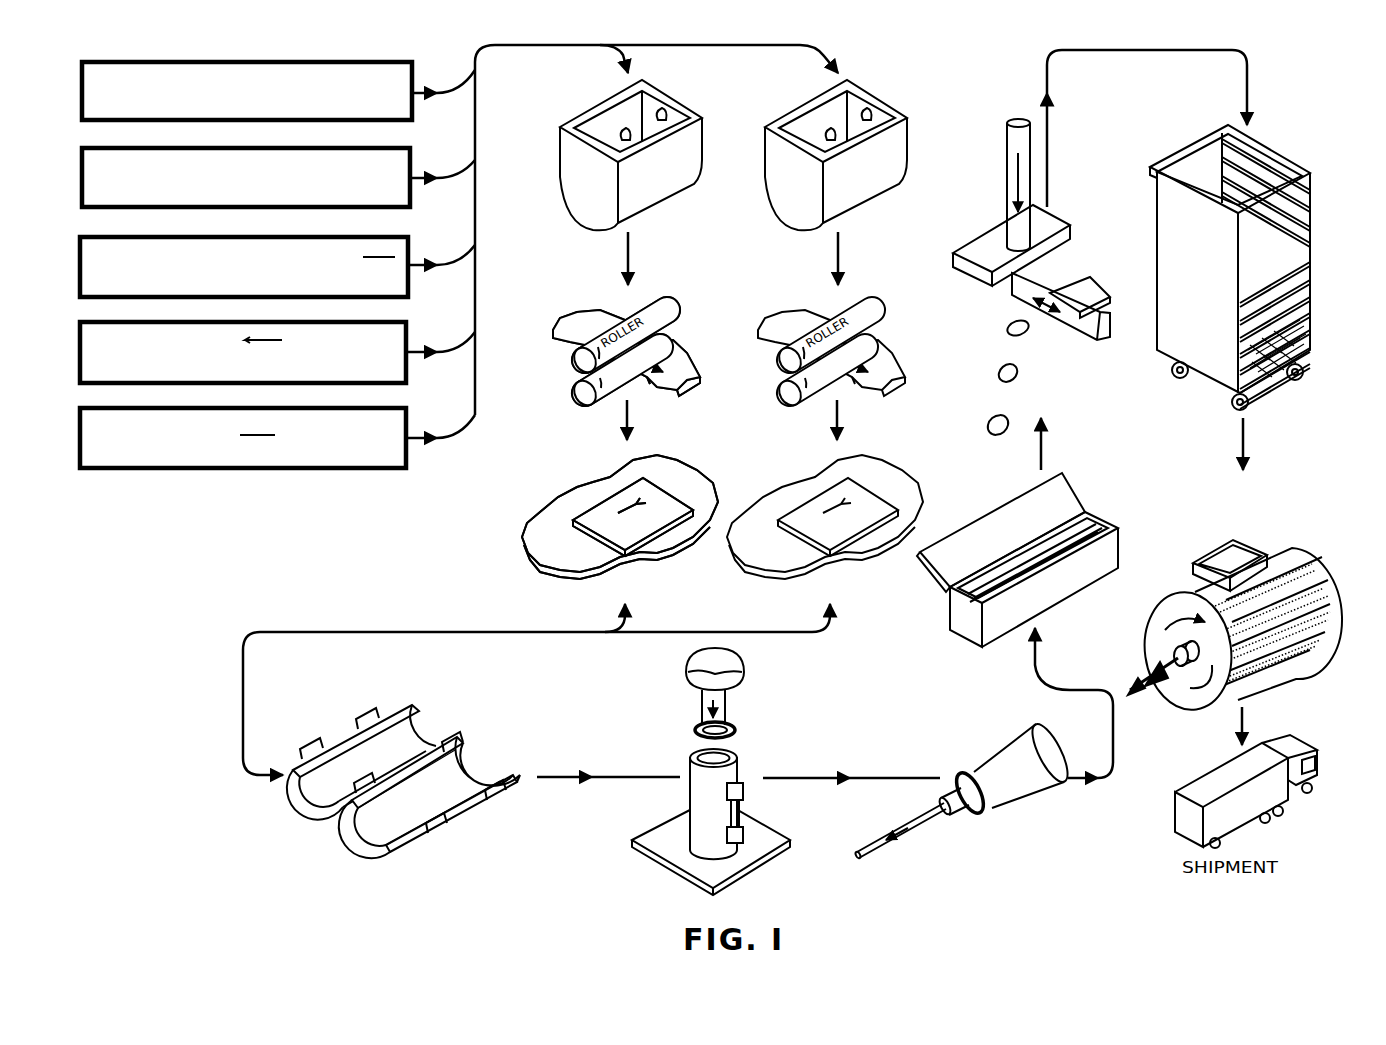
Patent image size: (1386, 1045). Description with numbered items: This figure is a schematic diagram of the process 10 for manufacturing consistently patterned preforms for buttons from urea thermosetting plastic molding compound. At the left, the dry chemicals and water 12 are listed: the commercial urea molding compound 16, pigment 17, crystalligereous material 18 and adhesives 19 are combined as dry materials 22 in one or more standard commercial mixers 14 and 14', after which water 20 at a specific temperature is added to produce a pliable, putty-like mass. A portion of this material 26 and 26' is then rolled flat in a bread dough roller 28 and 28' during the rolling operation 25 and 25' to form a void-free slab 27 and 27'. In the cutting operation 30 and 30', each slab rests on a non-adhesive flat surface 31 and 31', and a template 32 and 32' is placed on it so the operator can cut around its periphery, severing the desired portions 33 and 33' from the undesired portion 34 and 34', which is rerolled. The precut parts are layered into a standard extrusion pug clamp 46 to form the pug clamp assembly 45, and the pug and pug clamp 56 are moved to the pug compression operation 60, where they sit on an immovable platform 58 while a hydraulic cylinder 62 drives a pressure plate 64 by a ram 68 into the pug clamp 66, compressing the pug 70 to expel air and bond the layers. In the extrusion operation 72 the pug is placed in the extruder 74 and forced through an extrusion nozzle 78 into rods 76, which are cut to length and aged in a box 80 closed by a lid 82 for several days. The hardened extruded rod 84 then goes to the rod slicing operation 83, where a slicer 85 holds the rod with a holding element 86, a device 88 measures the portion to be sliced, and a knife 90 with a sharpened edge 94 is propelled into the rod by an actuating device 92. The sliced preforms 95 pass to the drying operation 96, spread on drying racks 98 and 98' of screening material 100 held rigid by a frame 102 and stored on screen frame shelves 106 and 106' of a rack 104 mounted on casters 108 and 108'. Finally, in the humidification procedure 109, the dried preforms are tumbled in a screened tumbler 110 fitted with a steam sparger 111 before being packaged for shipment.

The process 10 is at (437, 514).
The dry chemicals and water 12 is at (622, 241).
The mixer 14 is at (647, 182).
The mixer 14' is at (854, 182).
The commercial urea thermosetting plastic molding compound 16 is at (247, 91).
The pigment 17 is at (246, 177).
The crystalligereous material 18 is at (244, 267).
The adhesives 19 is at (243, 352).
The water 20 is at (243, 438).
The dry materials 22 is at (398, 160).
The rolling operation 25 is at (631, 368).
The rolling operation 25' is at (838, 368).
The material 26 is at (562, 304).
The material 26' is at (766, 304).
The slab 27 is at (634, 415).
The slab 27' is at (840, 415).
The bread dough roller 28 is at (560, 376).
The bread dough roller 28' is at (764, 376).
The cutting operation 30 is at (612, 517).
The cutting operation 30' is at (817, 517).
The non-adhesive flat surface 31 is at (611, 596).
The non-adhesive flat surface 31' is at (818, 596).
The template 32 is at (662, 484).
The template 32' is at (869, 484).
The desired portions 33 is at (609, 521).
The desired portions 33' is at (814, 521).
The undesired portion 34 is at (541, 544).
The undesired portion 34' is at (748, 544).
The pug clamp assembly 45 is at (412, 826).
The extrusion pug clamp 46 is at (424, 735).
The pug and pug clamp 56 is at (690, 793).
The immovable platform 58 is at (711, 846).
The pug compression operation 60 is at (705, 895).
The hydraulic cylinder 62 is at (736, 674).
The pressure plate 64 is at (735, 728).
The pug clamp 66 is at (742, 776).
The ram 68 is at (728, 702).
The pug 70 is at (728, 760).
The extrusion operation 72 is at (977, 856).
The extruder 74 is at (990, 760).
The rods 76 is at (900, 829).
The extrusion nozzle 78 is at (943, 798).
The box 80 is at (970, 632).
The lid 82 is at (1065, 490).
The rod slicing operation 83 is at (1052, 391).
The hardened extruded rod 84 is at (1006, 156).
The slicer 85 is at (1047, 224).
The method of holding the rod 86 is at (1063, 240).
The measuring device 88 is at (1014, 294).
The slicing device 90 is at (1100, 286).
The actuating device 92 is at (1096, 338).
The sharpened edge 94 is at (1068, 278).
The preforms 95 is at (993, 418).
The drying operation 96 is at (1266, 444).
The drying rack 98 is at (1295, 343).
The drying rack 98' is at (1297, 363).
The screening material 100 is at (1242, 360).
The frame 102 is at (1312, 304).
The rack 104 is at (1230, 259).
The screen frame shelf 106 is at (1246, 240).
The screen frame shelf 106' is at (1338, 207).
The wheel or caster 108 is at (1324, 372).
The wheel or caster 108' is at (1268, 402).
The humidification procedure 109 is at (1292, 706).
The screened tumbler 110 is at (1303, 582).
The steam sparger 111 is at (1170, 656).